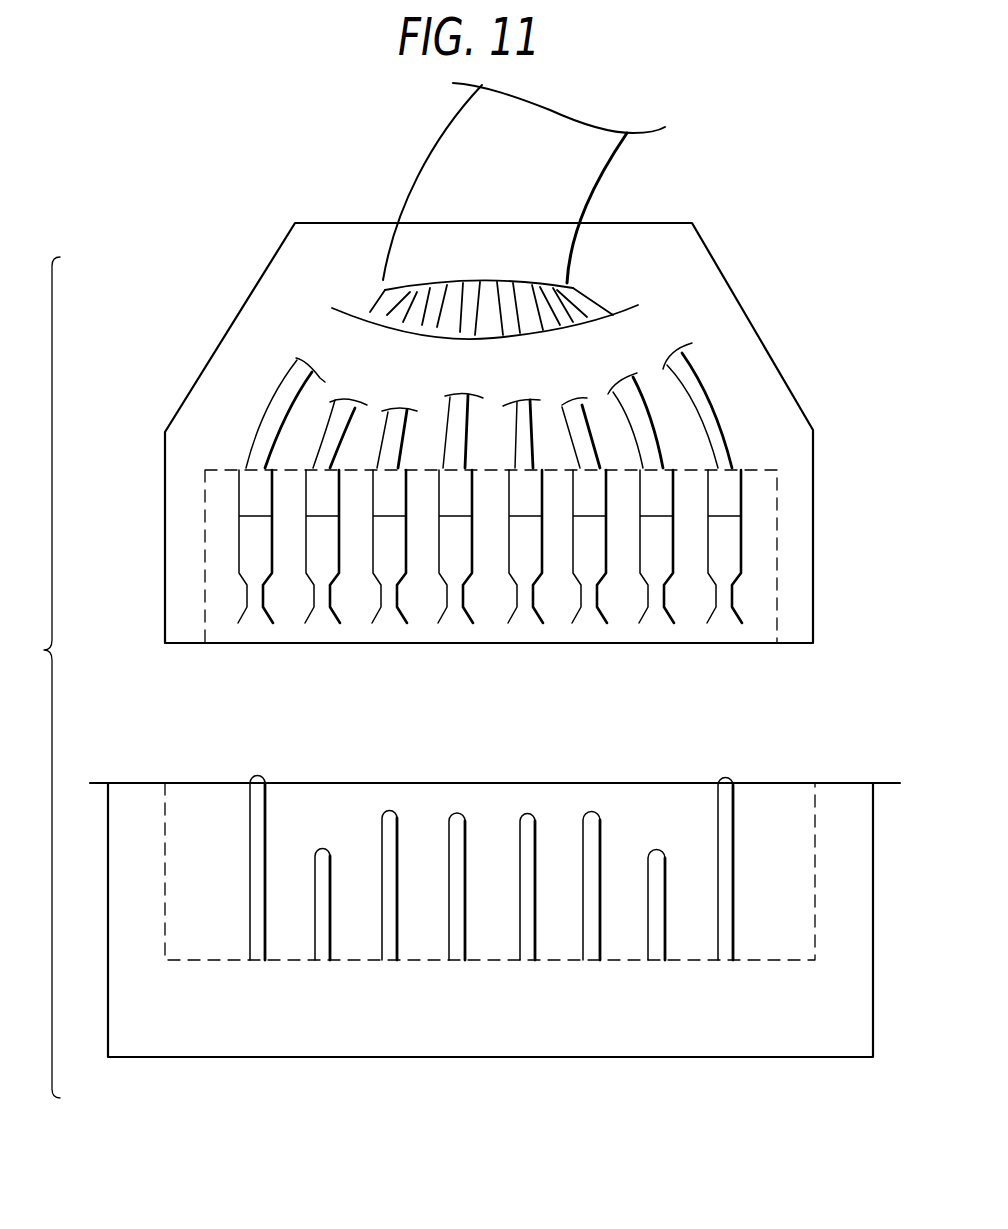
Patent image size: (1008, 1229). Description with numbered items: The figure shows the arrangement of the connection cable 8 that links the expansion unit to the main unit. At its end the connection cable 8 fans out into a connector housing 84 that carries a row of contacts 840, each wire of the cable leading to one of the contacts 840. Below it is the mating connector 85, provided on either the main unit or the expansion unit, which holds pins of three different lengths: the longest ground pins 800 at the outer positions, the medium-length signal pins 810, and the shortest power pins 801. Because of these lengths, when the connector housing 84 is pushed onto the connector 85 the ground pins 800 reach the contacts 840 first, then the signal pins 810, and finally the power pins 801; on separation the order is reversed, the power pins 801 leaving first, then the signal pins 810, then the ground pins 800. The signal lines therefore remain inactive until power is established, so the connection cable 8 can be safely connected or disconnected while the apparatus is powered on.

The connection cable 8 is at (572, 172).
The connector housing 84 is at (740, 310).
The contact pins 840 is at (315, 493).
The connector 85 is at (875, 893).
The ground pins 800 is at (253, 837).
The power pins 801 is at (322, 883).
The signal pins 810 is at (457, 843).